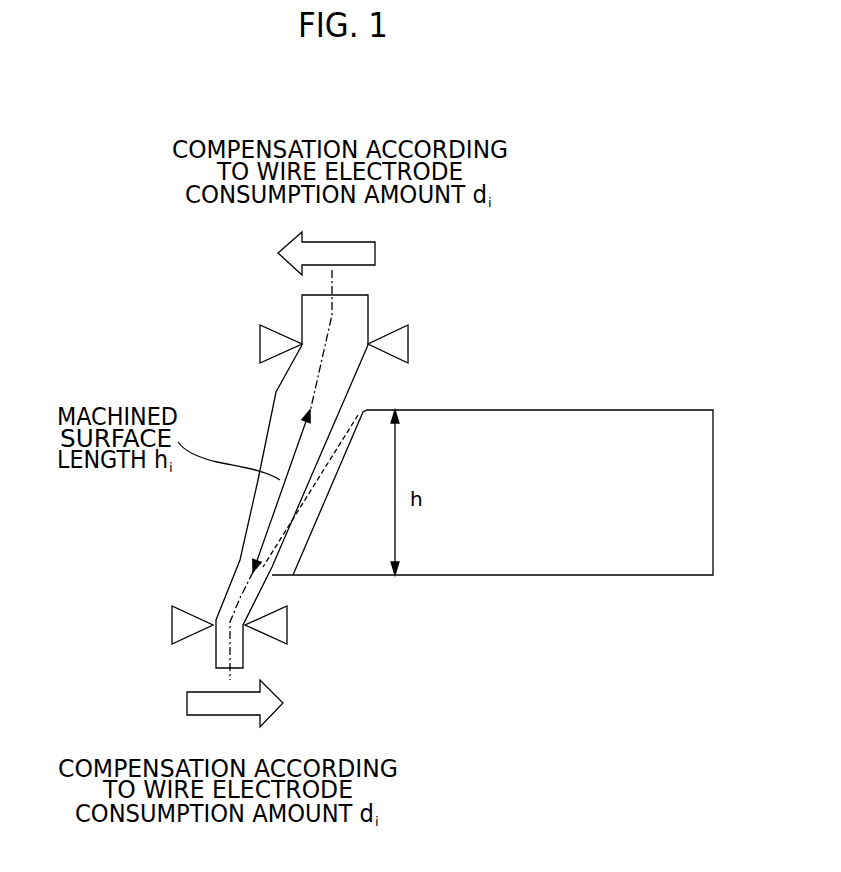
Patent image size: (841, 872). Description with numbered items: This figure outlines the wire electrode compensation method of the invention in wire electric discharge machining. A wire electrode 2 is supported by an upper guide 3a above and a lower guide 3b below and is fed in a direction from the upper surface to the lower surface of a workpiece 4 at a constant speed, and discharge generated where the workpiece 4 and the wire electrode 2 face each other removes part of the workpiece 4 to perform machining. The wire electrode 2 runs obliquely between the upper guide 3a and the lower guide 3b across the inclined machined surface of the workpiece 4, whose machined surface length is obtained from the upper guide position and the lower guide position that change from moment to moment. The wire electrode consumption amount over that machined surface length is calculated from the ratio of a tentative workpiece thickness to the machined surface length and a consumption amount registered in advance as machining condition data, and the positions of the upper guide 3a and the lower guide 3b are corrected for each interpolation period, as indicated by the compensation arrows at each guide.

The wire electrode 2 is at (353, 317).
The upper guide 3a is at (260, 345).
The lower guide 3b is at (172, 625).
The workpiece 4 is at (608, 408).